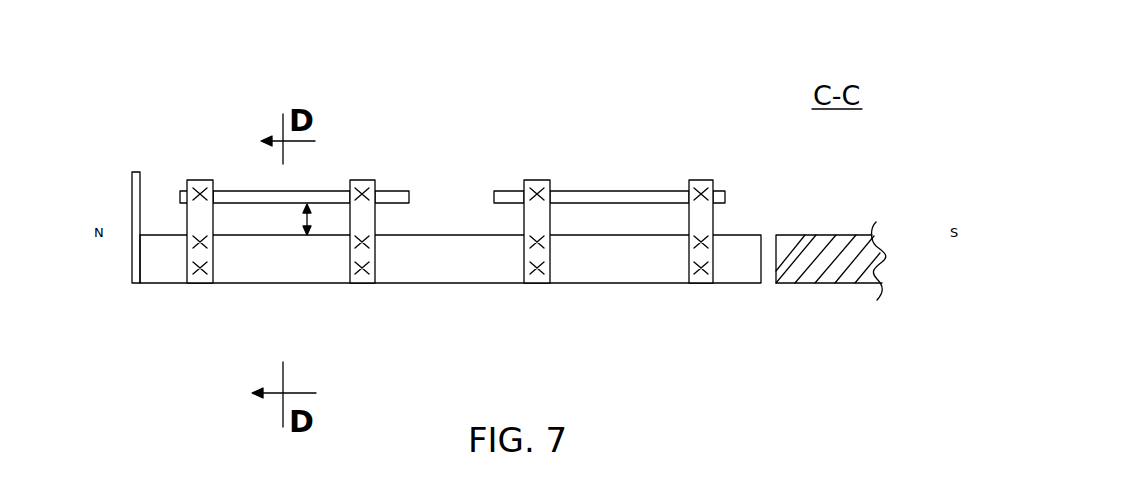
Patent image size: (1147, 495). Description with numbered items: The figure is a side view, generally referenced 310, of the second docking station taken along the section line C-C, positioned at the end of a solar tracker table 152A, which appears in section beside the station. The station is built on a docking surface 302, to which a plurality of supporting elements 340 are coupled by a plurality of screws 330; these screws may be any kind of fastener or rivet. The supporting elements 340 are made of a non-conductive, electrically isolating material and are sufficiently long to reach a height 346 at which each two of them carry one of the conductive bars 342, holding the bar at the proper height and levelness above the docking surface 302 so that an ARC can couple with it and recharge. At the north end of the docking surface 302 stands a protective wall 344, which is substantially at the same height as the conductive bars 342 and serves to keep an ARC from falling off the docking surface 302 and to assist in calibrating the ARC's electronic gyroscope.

The side view of second docking station 310 is at (633, 90).
The docking surface 302 is at (625, 236).
The screws 330 is at (207, 282).
The supporting elements 340 is at (198, 190).
The conductive bars 342 is at (342, 192).
The protective wall 344 is at (141, 200).
The height 346 is at (317, 222).
The solar tracker table 152A is at (833, 253).